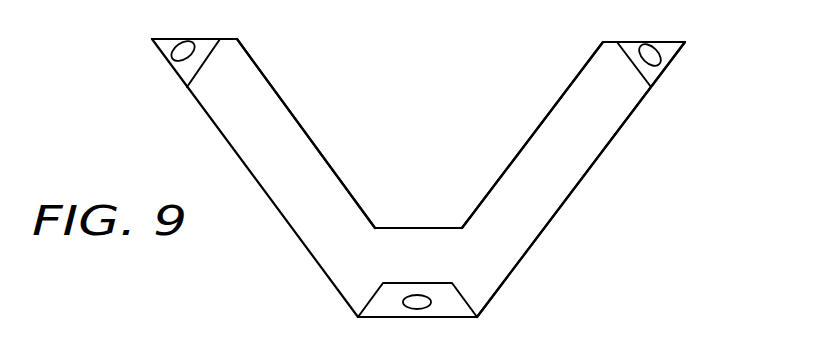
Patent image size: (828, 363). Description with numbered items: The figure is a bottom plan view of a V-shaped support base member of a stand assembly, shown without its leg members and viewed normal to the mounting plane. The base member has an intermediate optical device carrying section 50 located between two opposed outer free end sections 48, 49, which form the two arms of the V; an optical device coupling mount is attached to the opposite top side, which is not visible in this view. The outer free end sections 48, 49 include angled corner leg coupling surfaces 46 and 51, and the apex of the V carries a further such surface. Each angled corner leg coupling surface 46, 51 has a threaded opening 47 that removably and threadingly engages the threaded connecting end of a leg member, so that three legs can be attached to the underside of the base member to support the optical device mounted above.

The angled corner leg coupling surface 46 is at (700, 62).
The threaded opening 47 is at (648, 60).
The outer free end section 48 is at (313, 80).
The outer free end section 49 is at (570, 98).
The intermediate optical device carrying section 50 is at (428, 243).
The angled corner leg coupling surface 51 is at (455, 308).